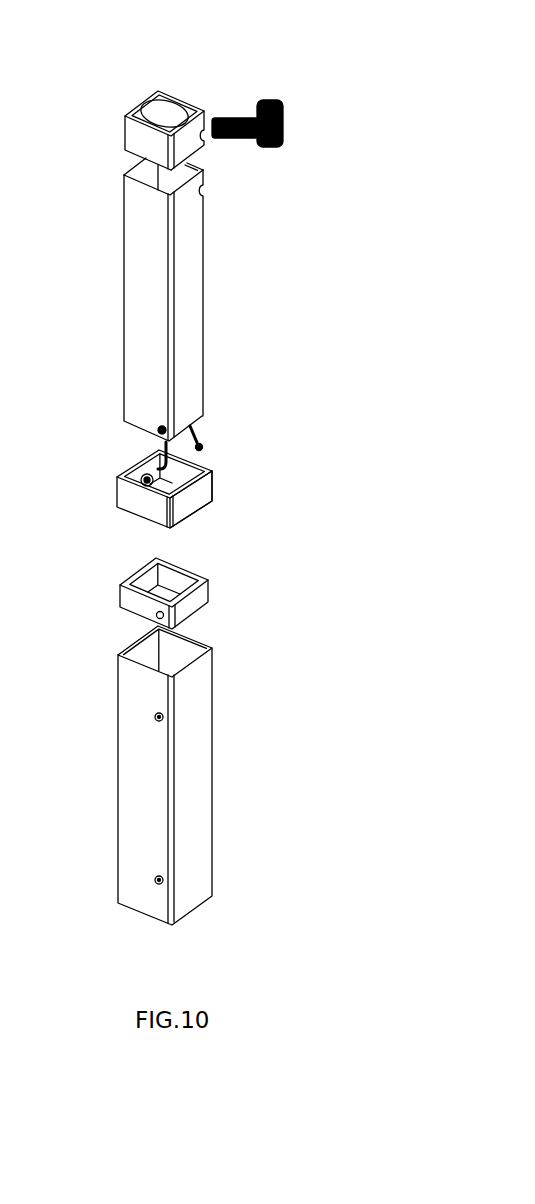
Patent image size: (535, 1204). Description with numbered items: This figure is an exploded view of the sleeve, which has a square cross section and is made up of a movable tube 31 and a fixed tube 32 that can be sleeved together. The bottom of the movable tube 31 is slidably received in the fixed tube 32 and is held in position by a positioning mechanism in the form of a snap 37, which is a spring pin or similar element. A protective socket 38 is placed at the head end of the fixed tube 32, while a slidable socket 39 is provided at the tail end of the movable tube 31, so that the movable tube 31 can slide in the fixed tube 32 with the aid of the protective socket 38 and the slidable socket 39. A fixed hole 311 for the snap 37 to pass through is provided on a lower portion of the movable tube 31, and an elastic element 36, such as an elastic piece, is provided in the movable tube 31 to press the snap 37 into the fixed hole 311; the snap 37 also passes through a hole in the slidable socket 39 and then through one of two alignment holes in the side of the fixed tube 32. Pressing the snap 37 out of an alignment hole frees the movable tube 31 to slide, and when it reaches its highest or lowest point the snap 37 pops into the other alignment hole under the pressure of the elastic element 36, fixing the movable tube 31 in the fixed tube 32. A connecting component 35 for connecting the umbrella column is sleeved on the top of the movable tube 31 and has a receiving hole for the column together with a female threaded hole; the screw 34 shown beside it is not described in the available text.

The movable tube 31 is at (187, 302).
The fixed hole 311 is at (160, 427).
The fixed tube 32 is at (197, 765).
The knurled screw 34 is at (285, 128).
The connecting component 35 is at (207, 108).
The elastic element 36 is at (201, 441).
The snap 37 is at (120, 474).
The protective socket 38 is at (197, 495).
The slidable socket 39 is at (210, 590).